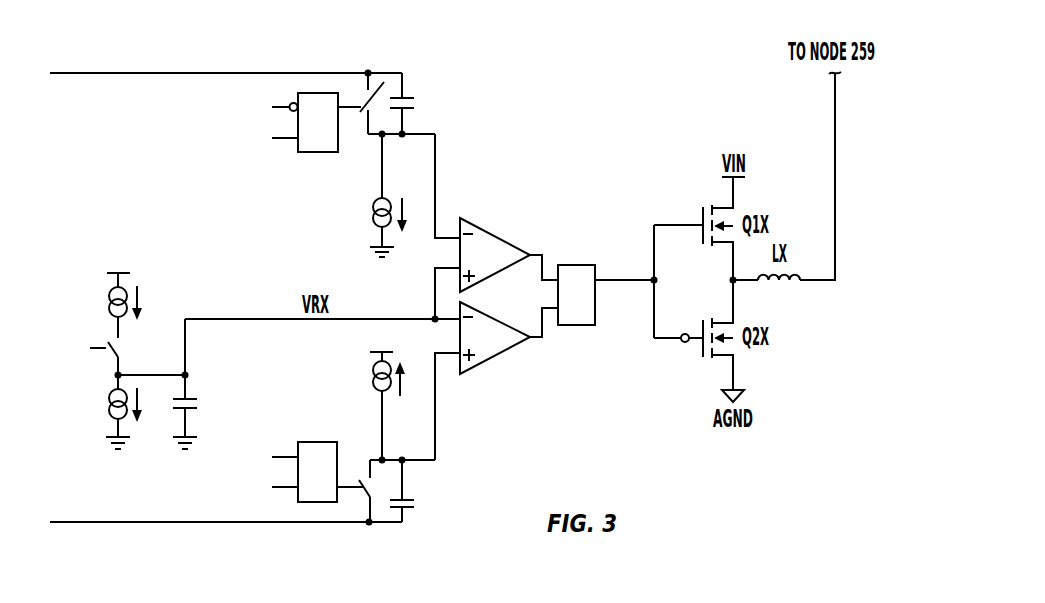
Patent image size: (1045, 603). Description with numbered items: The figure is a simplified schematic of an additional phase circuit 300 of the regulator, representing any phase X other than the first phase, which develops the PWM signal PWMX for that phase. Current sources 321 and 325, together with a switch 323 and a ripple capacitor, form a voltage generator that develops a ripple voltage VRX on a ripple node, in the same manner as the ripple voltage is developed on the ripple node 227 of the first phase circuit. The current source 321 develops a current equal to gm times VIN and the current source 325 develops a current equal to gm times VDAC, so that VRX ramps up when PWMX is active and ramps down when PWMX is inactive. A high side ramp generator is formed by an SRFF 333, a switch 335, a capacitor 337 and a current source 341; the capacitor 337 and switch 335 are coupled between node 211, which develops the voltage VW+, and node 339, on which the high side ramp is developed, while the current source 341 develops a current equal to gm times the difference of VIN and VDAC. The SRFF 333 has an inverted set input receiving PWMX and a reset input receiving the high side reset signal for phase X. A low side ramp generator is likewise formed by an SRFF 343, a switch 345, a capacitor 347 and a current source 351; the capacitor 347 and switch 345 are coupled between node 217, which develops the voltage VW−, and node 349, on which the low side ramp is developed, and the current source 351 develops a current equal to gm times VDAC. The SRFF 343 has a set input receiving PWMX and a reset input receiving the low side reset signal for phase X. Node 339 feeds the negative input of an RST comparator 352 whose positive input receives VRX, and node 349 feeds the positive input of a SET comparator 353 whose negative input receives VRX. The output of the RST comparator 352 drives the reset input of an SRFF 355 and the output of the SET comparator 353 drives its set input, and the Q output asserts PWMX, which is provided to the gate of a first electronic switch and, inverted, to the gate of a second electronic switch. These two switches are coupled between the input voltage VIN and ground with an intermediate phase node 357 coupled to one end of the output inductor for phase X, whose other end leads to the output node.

The node 211 is at (220, 73).
The node 217 is at (220, 522).
The ripple node 227 is at (192, 374).
The phase circuit 300 is at (602, 111).
The current source 321 is at (110, 290).
The switch 323 is at (122, 351).
The current source 325 is at (110, 397).
The SRFF 333 is at (328, 153).
The switch 335 is at (384, 86).
The capacitor 337 is at (416, 106).
The node 339 is at (437, 197).
The current source 341 is at (386, 200).
The SRFF 343 is at (332, 442).
The switch 345 is at (366, 494).
The capacitor 347 is at (412, 508).
The node 349 is at (436, 393).
The current source 351 is at (372, 362).
The RST comparator 352 is at (497, 266).
The SET comparator 353 is at (497, 348).
The SRFF 355 is at (571, 325).
The phase node 357 is at (730, 281).